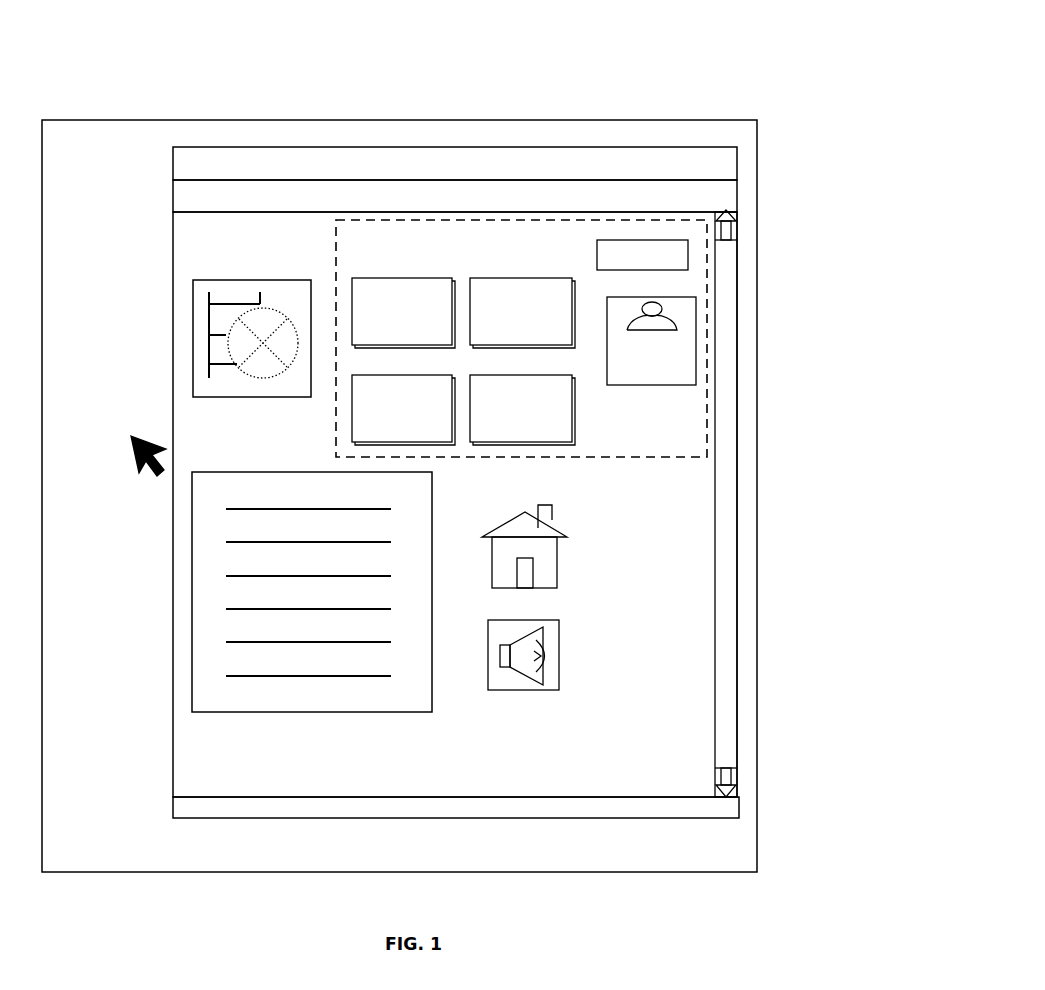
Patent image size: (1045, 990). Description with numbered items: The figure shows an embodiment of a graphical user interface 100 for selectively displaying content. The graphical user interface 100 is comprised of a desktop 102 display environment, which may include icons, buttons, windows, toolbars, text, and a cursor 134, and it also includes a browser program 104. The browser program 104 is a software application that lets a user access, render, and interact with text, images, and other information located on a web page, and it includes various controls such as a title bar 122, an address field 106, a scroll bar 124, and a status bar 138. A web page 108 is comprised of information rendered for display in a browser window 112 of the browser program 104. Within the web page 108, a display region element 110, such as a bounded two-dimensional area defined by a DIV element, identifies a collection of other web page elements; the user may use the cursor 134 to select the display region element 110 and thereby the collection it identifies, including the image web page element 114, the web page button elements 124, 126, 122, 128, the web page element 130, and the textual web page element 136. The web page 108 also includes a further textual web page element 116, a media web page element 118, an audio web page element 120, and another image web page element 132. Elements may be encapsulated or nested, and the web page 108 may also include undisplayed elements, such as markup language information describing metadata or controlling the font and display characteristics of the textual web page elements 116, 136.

The graphical user interface 100 is at (698, 48).
The desktop 102 is at (232, 121).
The browser program 104 is at (377, 147).
The address field 106 is at (592, 190).
The web page 108 is at (670, 635).
The display region element 110 is at (707, 340).
The browser window 112 is at (175, 280).
The image web page element 114 is at (696, 305).
The textual web page element 116 is at (193, 590).
The media web page element 118 is at (193, 338).
The audio web page element 120 is at (525, 690).
The title bar 122 is at (352, 407).
The scroll bar 124 is at (352, 305).
The web page button element 126 is at (520, 278).
The web page button element 128 is at (688, 250).
The web page element 130 is at (520, 442).
The image web page element 132 is at (558, 577).
The cursor 134 is at (130, 449).
The textual web page element 136 is at (355, 252).
The status bar 138 is at (660, 806).